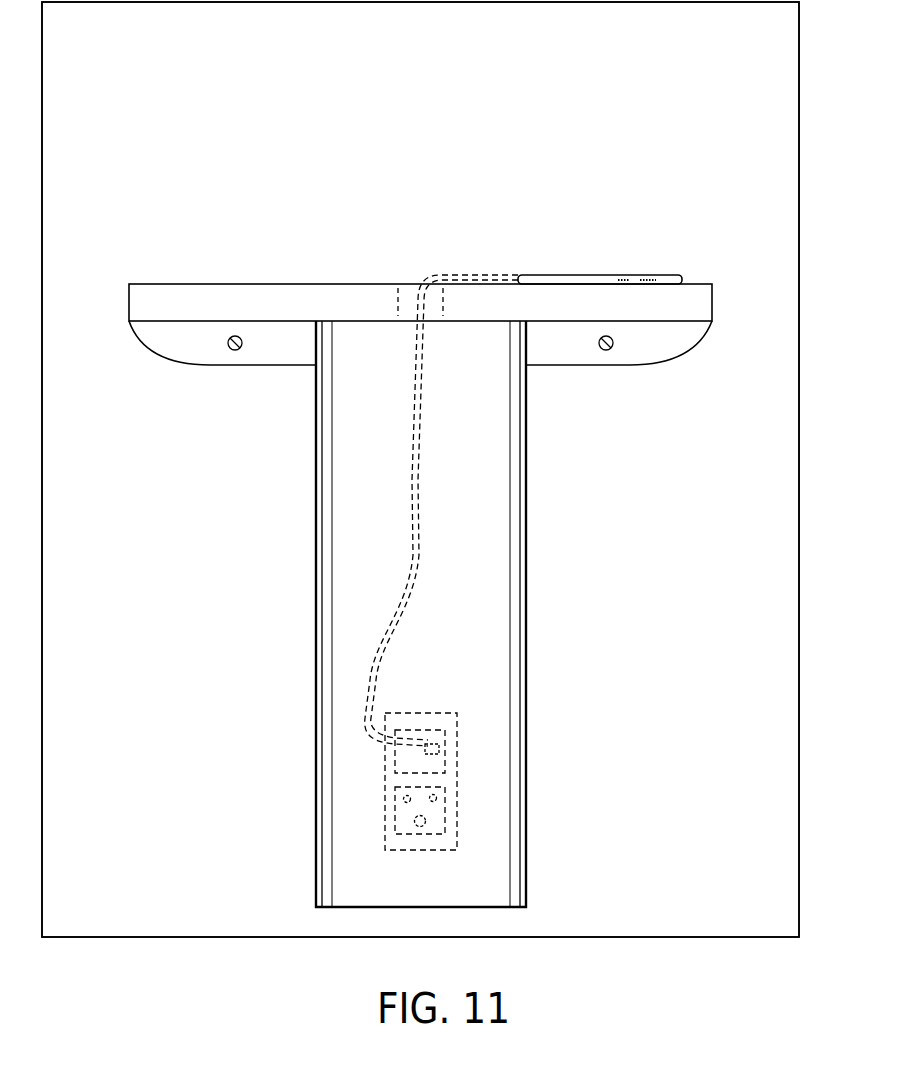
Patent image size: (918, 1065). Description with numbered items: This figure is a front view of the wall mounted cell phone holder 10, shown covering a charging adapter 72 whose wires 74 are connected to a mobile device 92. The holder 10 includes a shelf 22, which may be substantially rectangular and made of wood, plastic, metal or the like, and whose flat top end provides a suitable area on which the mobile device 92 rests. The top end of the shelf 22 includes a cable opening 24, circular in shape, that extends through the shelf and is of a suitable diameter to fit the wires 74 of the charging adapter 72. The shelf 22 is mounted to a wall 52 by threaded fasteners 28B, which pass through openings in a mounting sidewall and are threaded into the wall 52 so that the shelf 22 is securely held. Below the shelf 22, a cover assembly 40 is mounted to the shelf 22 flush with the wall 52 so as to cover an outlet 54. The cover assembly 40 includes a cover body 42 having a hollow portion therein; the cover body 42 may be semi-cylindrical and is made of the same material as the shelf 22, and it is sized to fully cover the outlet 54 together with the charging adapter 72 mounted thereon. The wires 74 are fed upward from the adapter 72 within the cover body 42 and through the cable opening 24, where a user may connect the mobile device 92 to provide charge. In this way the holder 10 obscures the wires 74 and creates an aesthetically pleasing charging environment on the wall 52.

The wall mounted cell phone holder 10 is at (168, 76).
The shelf 22 is at (260, 284).
The cable opening 24 is at (398, 303).
The threaded fasteners 28B is at (606, 352).
The cover assembly 40 is at (350, 588).
The cover body 42 is at (468, 623).
The wall 52 is at (756, 856).
The outlet 54 is at (395, 817).
The charging adapter 72 is at (433, 760).
The wires 74 is at (413, 572).
The mobile device 92 is at (587, 275).